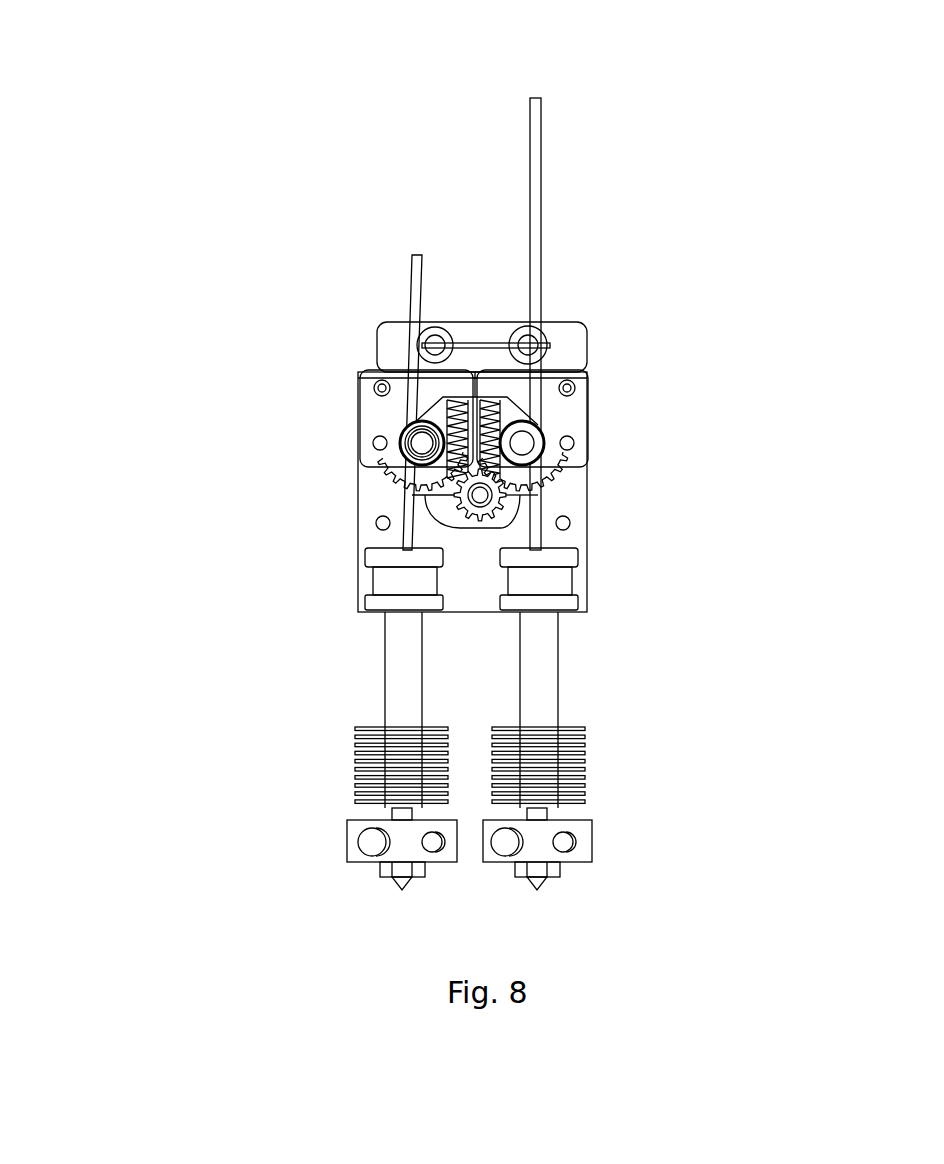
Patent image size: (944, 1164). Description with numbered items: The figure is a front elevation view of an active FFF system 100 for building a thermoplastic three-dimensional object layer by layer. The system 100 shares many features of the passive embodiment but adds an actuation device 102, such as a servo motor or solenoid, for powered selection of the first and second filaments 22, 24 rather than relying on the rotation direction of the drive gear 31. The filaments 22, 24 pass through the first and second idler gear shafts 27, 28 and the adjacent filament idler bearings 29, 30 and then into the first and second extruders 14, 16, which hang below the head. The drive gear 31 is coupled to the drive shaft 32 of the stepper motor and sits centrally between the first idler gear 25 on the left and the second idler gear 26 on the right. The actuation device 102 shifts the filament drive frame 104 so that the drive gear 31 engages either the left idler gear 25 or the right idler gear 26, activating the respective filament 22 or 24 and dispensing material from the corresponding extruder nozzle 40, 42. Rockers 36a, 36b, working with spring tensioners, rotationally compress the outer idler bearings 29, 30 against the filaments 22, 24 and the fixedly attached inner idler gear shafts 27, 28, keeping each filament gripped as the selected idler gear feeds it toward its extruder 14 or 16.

The active FFF system 100 is at (625, 143).
The filament drive frame 104 is at (192, 365).
The actuation device 102 is at (449, 326).
The first filament 22 is at (412, 268).
The second filament 24 is at (542, 258).
The first idler gear shaft 27 is at (421, 426).
The second idler gear shaft 28 is at (523, 432).
The first rocker 36a is at (368, 416).
The second rocker 36b is at (585, 415).
The first filament idler bearing 29 is at (357, 446).
The second filament idler bearing 30 is at (589, 445).
The first idler gear 25 is at (385, 473).
The second idler gear 26 is at (560, 478).
The drive shaft 32 is at (474, 500).
The drive gear 31 is at (497, 512).
The first extruder 14 is at (347, 843).
The second extruder 16 is at (580, 845).
The extruder nozzle 42 is at (400, 888).
The extruder nozzle 40 is at (545, 886).